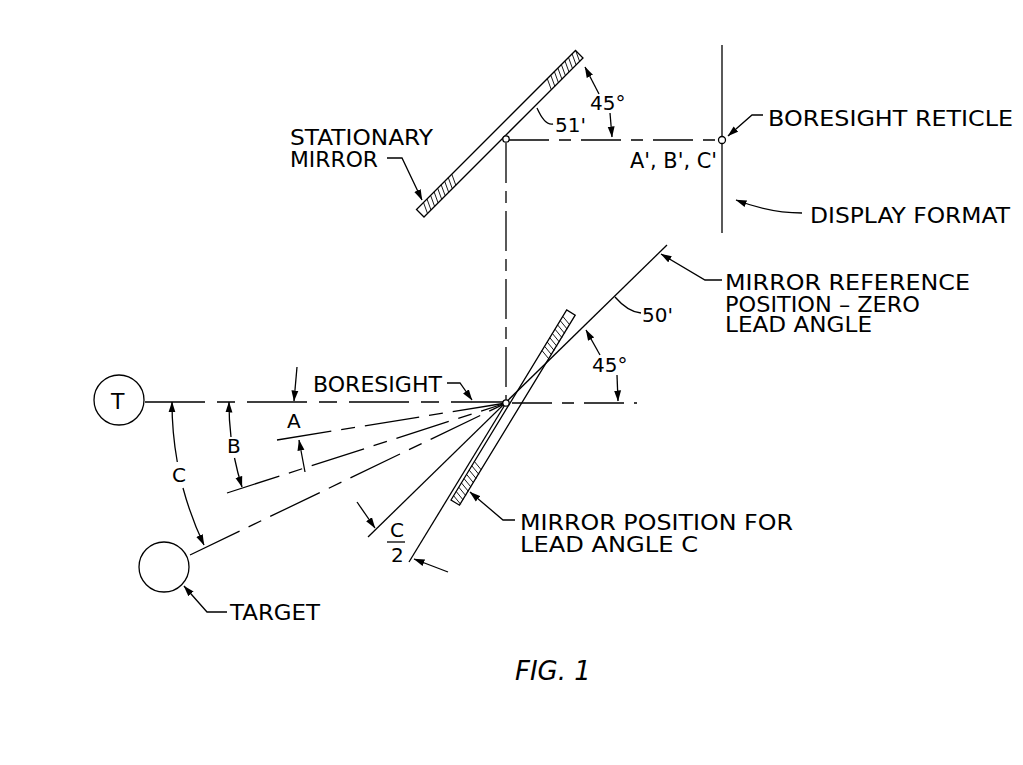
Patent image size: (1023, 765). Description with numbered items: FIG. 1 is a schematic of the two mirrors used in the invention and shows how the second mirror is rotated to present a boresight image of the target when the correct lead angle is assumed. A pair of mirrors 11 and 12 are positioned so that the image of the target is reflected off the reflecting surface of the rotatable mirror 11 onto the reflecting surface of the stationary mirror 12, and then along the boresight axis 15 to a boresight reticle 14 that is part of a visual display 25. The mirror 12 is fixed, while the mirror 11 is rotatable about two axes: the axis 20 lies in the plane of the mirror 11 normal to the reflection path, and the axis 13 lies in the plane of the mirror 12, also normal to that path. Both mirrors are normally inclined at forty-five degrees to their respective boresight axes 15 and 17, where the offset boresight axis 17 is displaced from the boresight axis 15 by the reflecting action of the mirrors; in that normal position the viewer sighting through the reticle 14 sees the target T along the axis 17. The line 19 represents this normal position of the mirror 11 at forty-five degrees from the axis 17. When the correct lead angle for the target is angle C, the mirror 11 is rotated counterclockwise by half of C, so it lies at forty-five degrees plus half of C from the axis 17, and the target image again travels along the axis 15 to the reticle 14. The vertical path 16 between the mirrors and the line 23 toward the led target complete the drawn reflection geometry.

The rotatable mirror 11 is at (552, 333).
The stationary mirror 12 is at (446, 196).
The axis 13 is at (511, 146).
The boresight reticle 14 is at (725, 146).
The boresight axis 15 is at (636, 140).
The optical path between mirrors 16 is at (507, 220).
The boresight axis 17 is at (188, 401).
The line 19 is at (638, 272).
The axis 20 is at (504, 400).
The line of sight to target T1 23 is at (238, 534).
The visual display 25 is at (723, 68).